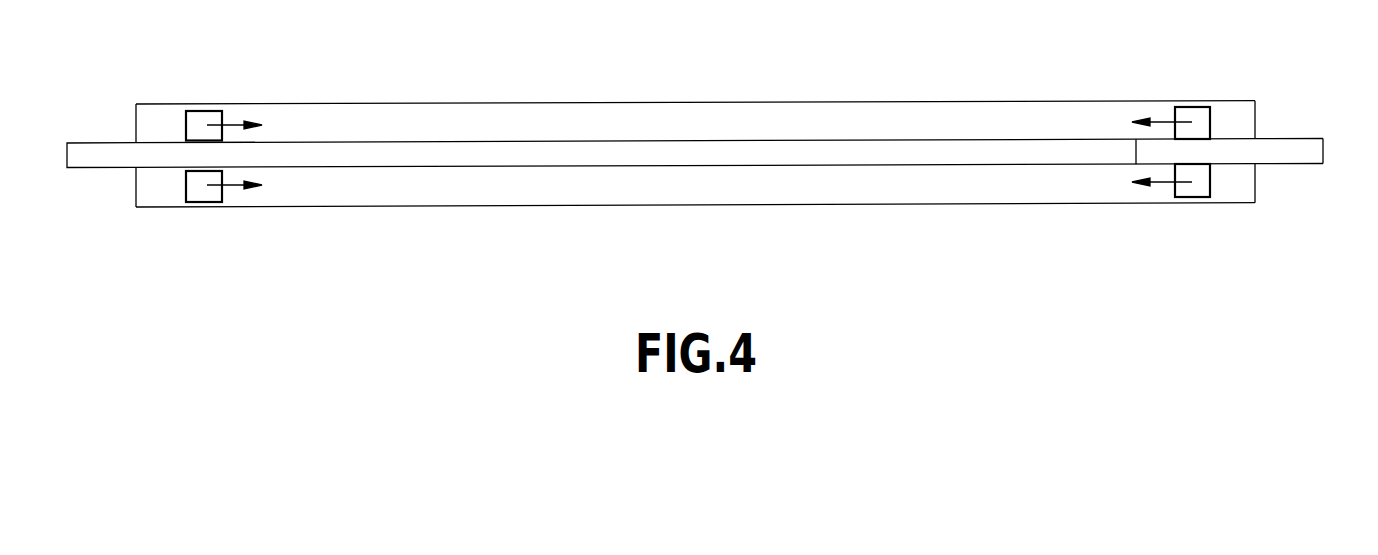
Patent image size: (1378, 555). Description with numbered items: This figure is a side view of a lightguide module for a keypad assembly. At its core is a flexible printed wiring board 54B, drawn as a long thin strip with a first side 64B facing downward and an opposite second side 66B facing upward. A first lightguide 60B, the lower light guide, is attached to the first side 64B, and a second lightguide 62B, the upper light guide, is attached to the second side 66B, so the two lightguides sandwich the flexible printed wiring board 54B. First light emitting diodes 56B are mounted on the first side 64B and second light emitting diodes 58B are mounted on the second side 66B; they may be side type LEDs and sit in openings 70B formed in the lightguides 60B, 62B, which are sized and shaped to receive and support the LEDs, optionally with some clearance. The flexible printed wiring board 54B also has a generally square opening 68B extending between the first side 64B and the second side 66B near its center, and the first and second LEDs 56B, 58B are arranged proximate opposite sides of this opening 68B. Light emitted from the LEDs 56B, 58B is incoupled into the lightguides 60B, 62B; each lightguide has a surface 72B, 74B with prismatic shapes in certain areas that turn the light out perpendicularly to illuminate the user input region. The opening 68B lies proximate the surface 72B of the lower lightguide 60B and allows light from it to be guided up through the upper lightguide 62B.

The flexible printed wiring board 54B is at (90, 152).
The first light emitting diodes 56B is at (213, 193).
The second light emitting diodes 58B is at (212, 118).
The first lightguide 60B is at (643, 192).
The second lightguide 62B is at (707, 120).
The first side 64B is at (1317, 165).
The second side 66B is at (1293, 137).
The opening 68B is at (1137, 150).
The openings 70B is at (187, 121).
The surface 72B is at (490, 168).
The surface 74B is at (423, 103).